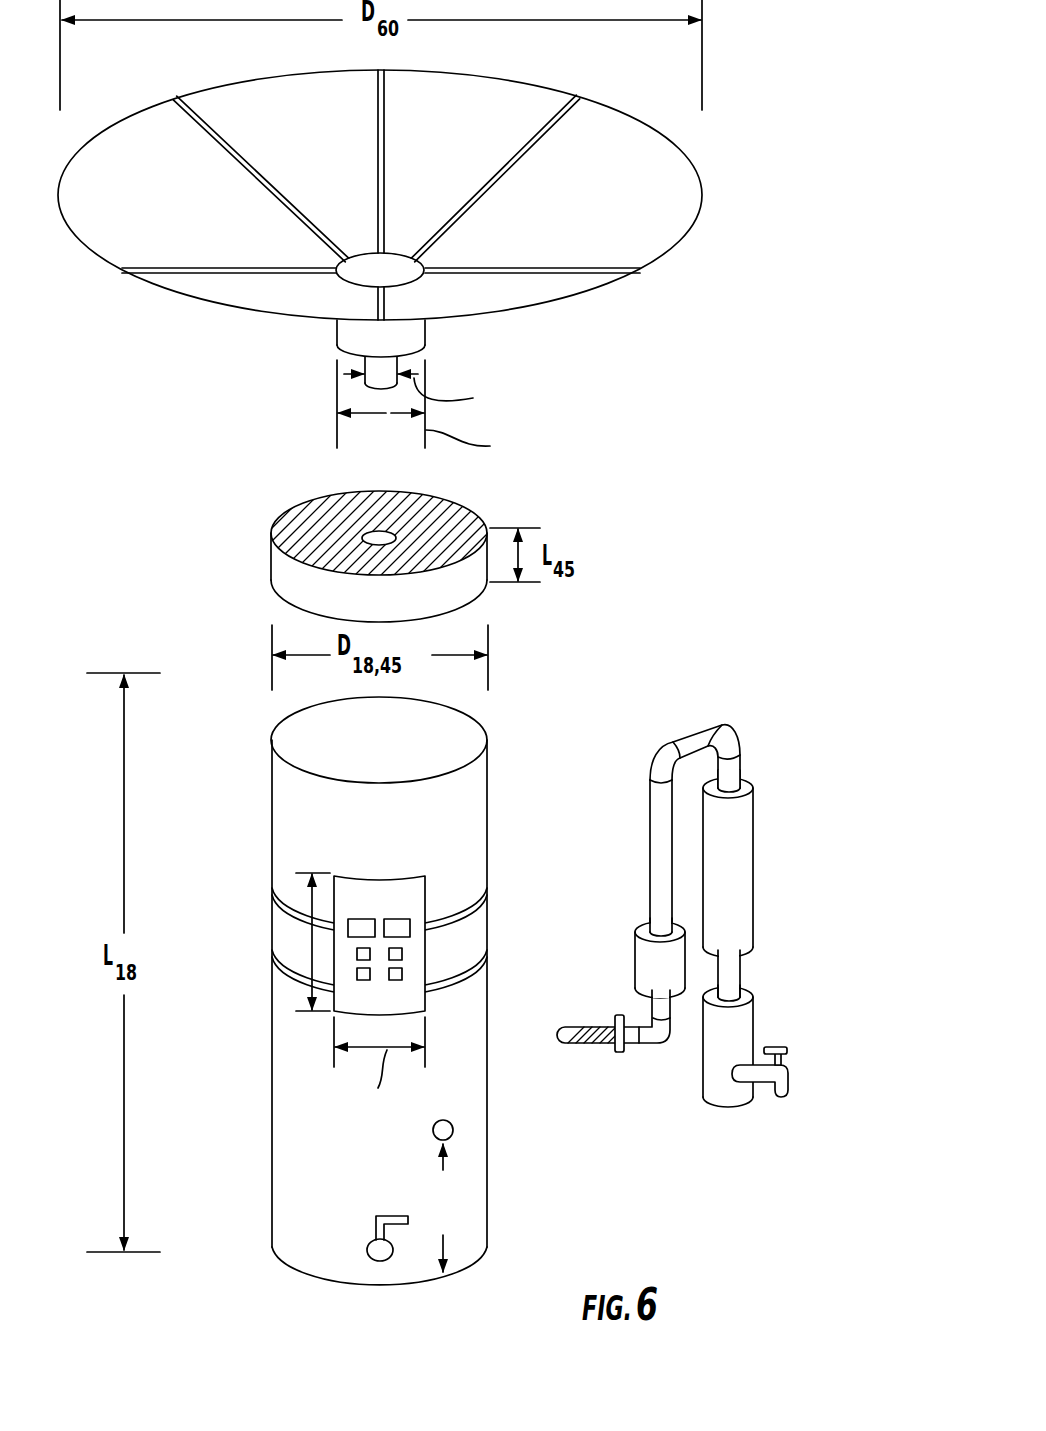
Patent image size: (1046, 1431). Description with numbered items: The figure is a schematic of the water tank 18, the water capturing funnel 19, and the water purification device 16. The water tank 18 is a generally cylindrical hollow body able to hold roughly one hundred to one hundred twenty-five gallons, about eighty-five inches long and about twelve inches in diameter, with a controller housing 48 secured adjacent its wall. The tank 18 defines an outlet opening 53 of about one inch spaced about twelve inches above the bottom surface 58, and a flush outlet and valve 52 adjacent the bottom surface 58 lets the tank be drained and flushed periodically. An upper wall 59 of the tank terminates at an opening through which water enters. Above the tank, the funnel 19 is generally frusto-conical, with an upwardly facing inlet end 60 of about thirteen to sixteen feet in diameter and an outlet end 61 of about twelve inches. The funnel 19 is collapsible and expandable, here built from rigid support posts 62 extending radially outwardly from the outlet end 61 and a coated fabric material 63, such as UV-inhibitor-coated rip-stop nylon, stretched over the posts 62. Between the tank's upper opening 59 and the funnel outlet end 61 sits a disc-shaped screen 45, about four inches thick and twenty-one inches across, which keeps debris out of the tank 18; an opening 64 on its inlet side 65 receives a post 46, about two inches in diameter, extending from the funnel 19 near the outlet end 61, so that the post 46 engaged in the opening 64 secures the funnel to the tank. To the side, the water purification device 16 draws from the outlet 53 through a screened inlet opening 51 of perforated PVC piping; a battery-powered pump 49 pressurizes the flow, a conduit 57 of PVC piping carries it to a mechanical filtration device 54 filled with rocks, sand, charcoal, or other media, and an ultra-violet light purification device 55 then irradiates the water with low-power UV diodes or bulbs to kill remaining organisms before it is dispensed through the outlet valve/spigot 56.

The water purification device 16 is at (749, 919).
The water tank 18 is at (367, 1025).
The water capturing funnel 19 is at (411, 259).
The screen 45 is at (406, 552).
The post 46 is at (337, 401).
The controller housing 48 is at (366, 872).
The pump 49 is at (626, 953).
The screened inlet opening 51 is at (590, 1055).
The flush outlet and valve 52 is at (384, 1264).
The outlet opening 53 is at (453, 1127).
The mechanical filtration device 54 is at (757, 825).
The ultra-violet light purification device 55 is at (763, 1015).
The outlet valve/spigot 56 is at (797, 1081).
The conduit 57 is at (728, 738).
The bottom surface 58 is at (317, 1280).
The upper wall 59 is at (481, 723).
The inlet end 60 is at (610, 107).
The outlet end 61 is at (425, 254).
The rigid support posts 62 is at (578, 273).
The coated fabric material 63 is at (608, 225).
The opening 64 is at (365, 532).
The inlet side 65 is at (282, 538).